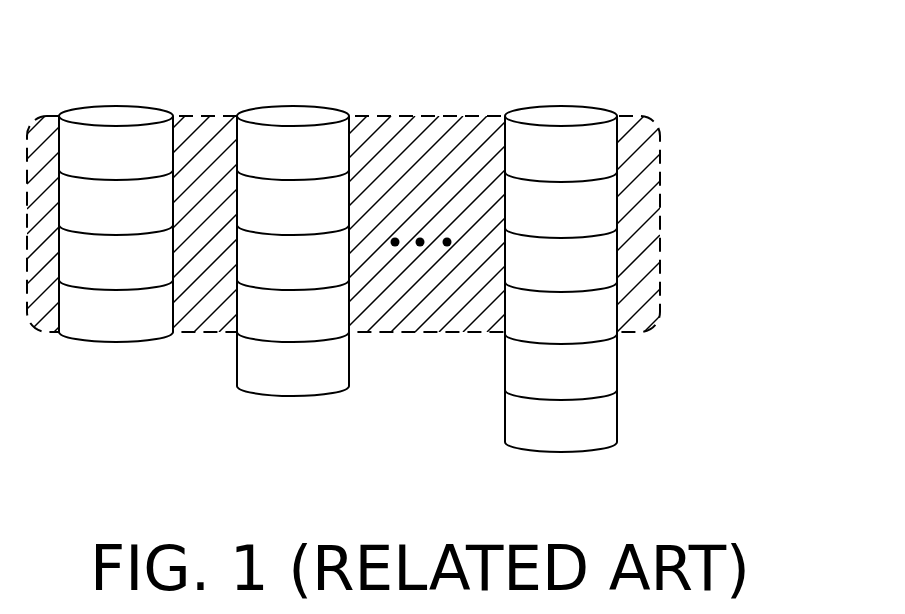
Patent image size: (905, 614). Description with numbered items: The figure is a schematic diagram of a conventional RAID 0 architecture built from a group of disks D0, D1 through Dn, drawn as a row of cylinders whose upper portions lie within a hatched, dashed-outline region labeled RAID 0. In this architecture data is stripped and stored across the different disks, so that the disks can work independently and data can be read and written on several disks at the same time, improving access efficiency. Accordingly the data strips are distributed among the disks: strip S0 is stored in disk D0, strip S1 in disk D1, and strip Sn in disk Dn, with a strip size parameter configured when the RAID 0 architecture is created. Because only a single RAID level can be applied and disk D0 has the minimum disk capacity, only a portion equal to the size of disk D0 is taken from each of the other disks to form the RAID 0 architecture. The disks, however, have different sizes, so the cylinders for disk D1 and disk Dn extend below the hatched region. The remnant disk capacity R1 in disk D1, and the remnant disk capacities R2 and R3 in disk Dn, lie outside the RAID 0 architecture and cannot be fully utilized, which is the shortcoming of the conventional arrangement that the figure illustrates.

The disk D0 is at (116, 175).
The disk D1 is at (293, 202).
The disk Dn is at (561, 231).
The RAID 0 architecture RAID 0 is at (645, 200).
The data strip S0 is at (116, 155).
The data strip S1 is at (293, 155).
The remnant disk capacity R1 is at (293, 359).
The data strip Sn is at (561, 157).
The remnant disk capacity R2 is at (561, 361).
The remnant disk capacity R3 is at (561, 416).